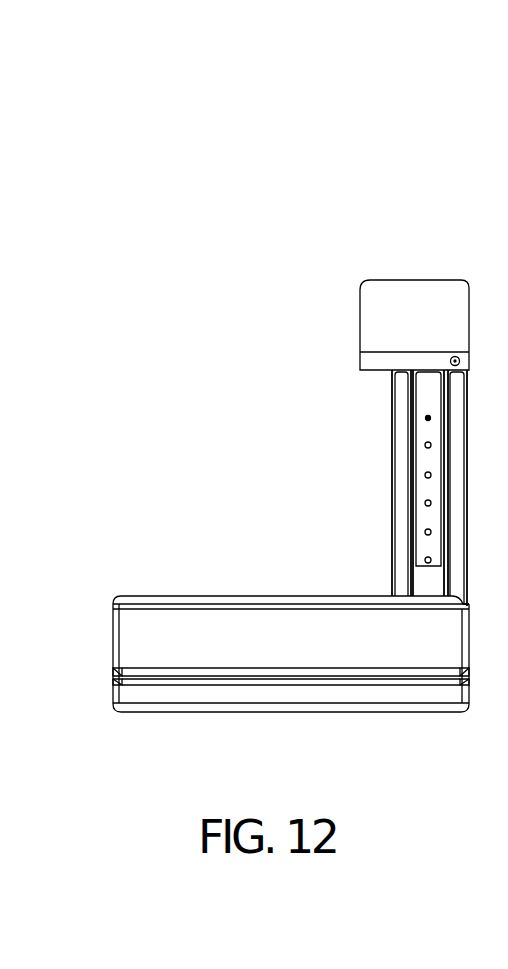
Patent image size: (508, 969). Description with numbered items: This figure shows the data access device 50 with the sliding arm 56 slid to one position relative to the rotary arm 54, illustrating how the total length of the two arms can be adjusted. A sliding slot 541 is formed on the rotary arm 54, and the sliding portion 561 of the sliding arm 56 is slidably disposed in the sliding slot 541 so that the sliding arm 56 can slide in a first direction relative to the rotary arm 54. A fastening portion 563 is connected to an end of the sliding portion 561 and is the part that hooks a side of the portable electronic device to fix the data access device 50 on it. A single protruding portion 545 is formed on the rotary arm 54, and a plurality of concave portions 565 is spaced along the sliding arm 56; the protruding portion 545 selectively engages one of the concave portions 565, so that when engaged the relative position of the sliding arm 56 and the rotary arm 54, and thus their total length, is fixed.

The data access device 50 is at (203, 218).
The rotary arm 54 is at (492, 231).
The sliding slot 541 is at (457, 395).
The protruding portion 545 is at (428, 418).
The sliding arm 56 is at (236, 263).
The sliding portion 561 is at (423, 382).
The fastening portion 563 is at (383, 312).
The concave portion 565 is at (424, 445).